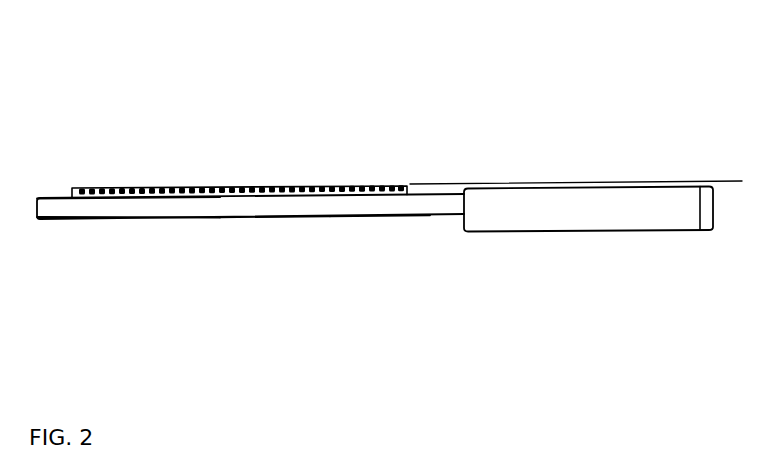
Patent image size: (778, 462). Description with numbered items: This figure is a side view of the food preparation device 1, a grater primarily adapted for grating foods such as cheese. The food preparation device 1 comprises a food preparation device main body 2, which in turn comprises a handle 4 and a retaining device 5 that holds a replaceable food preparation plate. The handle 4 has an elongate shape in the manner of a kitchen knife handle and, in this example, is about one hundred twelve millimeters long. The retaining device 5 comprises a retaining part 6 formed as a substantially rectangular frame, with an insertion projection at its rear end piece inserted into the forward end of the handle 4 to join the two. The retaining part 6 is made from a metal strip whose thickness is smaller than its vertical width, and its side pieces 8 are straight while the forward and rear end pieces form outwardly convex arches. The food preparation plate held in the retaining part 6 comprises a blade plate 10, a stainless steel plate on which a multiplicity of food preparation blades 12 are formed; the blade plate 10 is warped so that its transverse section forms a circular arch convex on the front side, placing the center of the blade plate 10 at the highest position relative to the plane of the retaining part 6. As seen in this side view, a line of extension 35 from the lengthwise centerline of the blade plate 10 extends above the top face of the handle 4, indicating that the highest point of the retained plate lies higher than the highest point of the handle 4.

The food preparation device 1 is at (379, 182).
The food preparation device main body 2 is at (437, 204).
The handle 4 is at (627, 232).
The retaining device 5 is at (397, 204).
The retaining part 6 is at (240, 204).
The side pieces 8 is at (193, 203).
The blade plate 10 is at (157, 188).
The food preparation blades 12 is at (210, 188).
The line of extension 35 is at (458, 183).